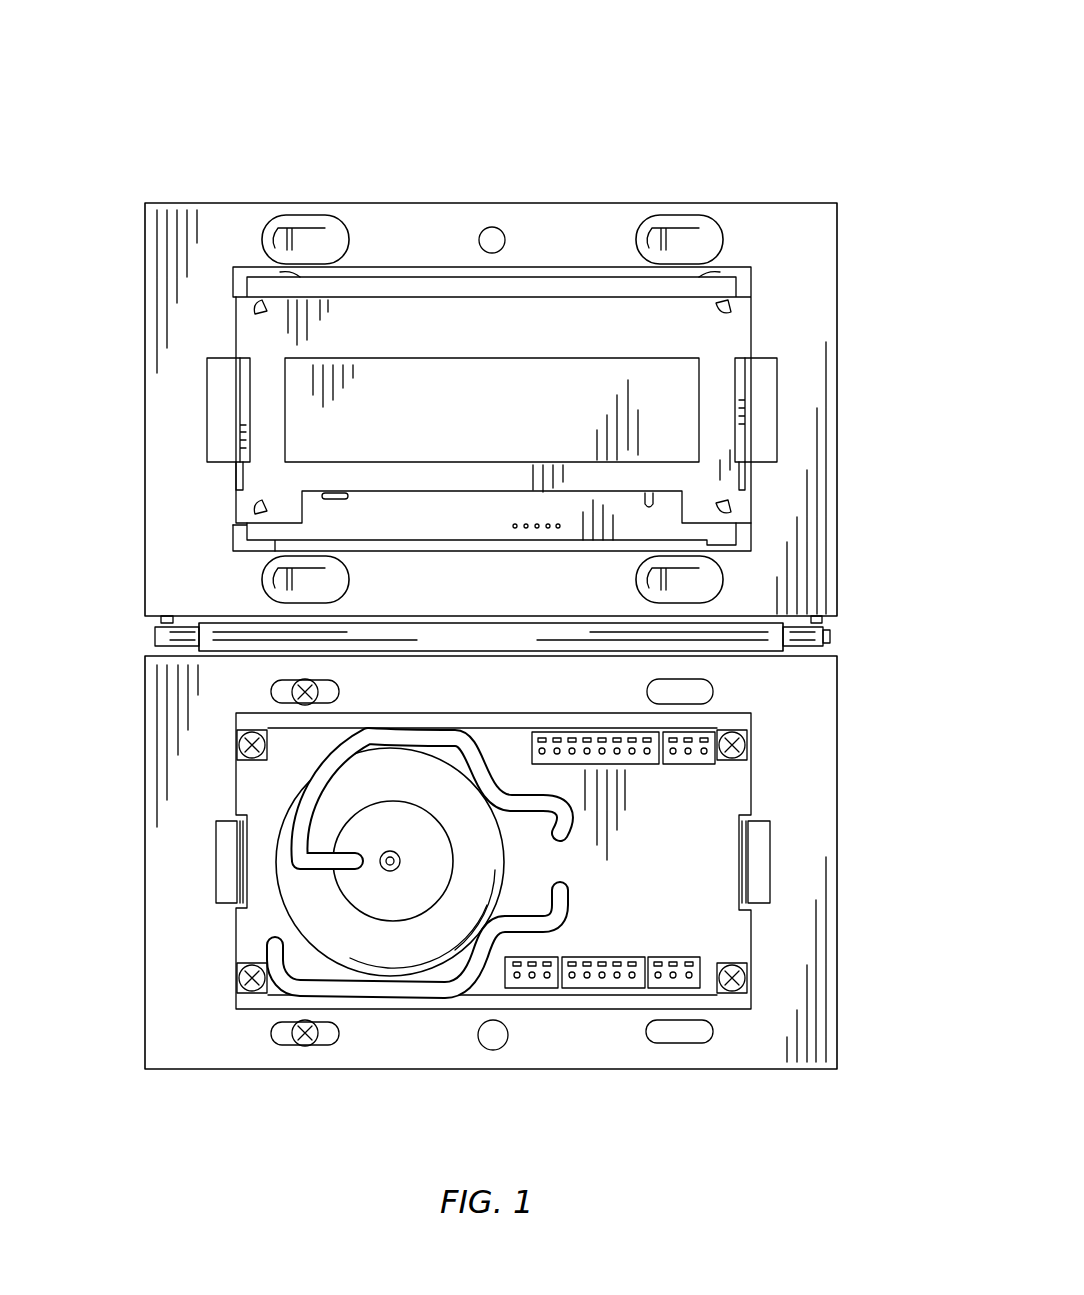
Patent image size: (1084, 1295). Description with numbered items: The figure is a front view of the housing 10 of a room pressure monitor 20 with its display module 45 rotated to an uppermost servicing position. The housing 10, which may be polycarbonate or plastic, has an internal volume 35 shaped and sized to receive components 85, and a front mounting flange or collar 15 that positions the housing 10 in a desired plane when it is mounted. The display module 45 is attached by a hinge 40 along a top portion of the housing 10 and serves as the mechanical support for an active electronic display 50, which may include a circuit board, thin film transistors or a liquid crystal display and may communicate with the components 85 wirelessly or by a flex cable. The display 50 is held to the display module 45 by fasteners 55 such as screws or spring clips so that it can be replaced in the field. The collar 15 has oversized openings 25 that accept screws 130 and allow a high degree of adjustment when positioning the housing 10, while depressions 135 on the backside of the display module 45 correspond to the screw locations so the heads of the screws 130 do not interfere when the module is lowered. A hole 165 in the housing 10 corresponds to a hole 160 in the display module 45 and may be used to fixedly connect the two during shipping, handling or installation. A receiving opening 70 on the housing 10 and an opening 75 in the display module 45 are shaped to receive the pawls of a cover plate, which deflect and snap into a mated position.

The housing 10 is at (850, 762).
The front mounting flange 15 is at (190, 773).
The room pressure monitor 20 is at (643, 75).
The oversized openings 25 is at (678, 1044).
The internal volume 35 is at (655, 892).
The hinge 40 is at (738, 632).
The display module 45 is at (837, 243).
The display 50 is at (643, 385).
The fasteners 55 is at (750, 402).
The receiving opening 70 is at (223, 858).
The opening 75 is at (223, 407).
The components 85 is at (320, 910).
The screws 130 is at (305, 1046).
The depressions 135 is at (260, 239).
The hole 160 is at (506, 239).
The hole 165 is at (478, 1046).